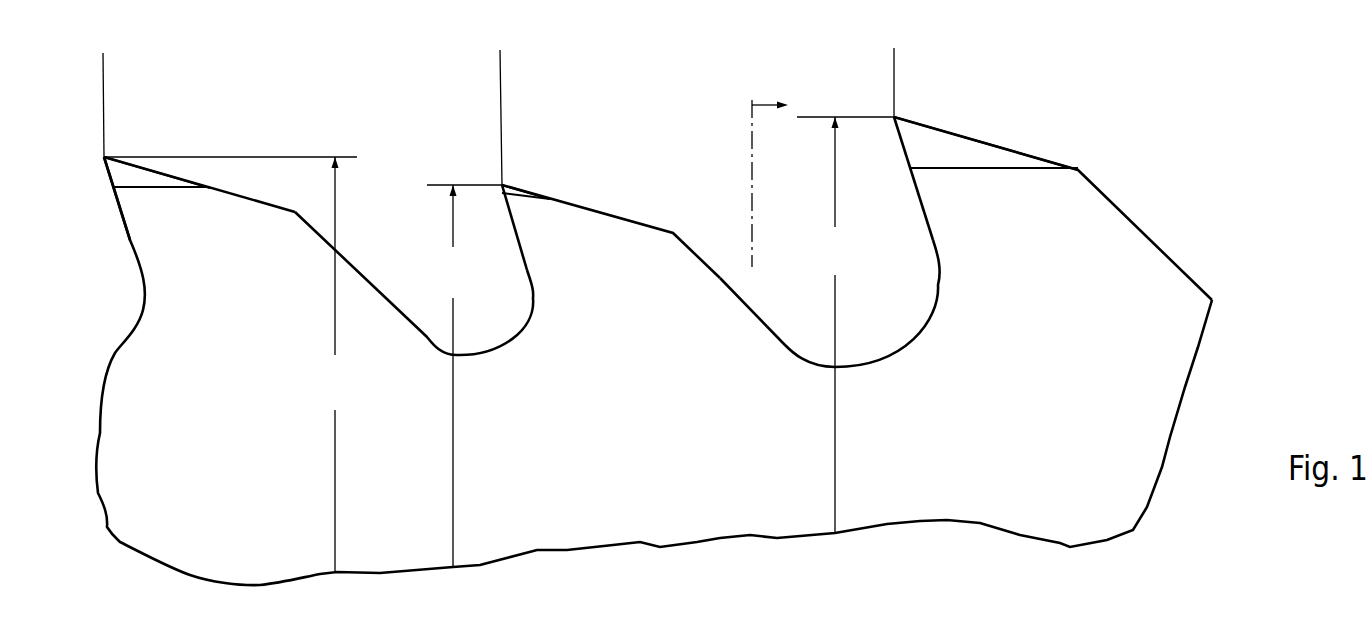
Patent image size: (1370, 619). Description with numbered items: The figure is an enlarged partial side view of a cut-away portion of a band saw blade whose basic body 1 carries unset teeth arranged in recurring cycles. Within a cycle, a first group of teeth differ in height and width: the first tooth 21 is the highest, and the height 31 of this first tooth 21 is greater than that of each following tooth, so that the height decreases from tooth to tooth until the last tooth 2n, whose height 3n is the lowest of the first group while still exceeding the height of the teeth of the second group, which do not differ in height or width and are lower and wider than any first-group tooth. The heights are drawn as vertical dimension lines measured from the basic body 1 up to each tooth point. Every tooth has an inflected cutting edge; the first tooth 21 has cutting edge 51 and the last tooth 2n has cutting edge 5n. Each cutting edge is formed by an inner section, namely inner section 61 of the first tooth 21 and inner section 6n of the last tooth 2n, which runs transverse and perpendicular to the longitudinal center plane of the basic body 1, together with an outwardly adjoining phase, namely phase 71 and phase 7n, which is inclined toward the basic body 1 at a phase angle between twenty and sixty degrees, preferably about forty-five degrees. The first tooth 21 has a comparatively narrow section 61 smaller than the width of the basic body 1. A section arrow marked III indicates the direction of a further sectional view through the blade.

The basic body 1 is at (638, 478).
The last tooth of first group 2n is at (168, 240).
The first tooth of first group 21 is at (1077, 263).
The height of last tooth of first group 3n is at (231, 364).
The height of first tooth of first group 31 is at (845, 325).
The inflected cutting edge of last first-group tooth 5n is at (98, 148).
The inflected cutting edge of first tooth 51 is at (890, 113).
The inner section of last first-group tooth 6n is at (106, 155).
The inner section of first tooth 61 is at (895, 117).
The phase of last first-group tooth 7n is at (112, 186).
The phase of first tooth 71 is at (903, 151).
The section line III is at (759, 169).